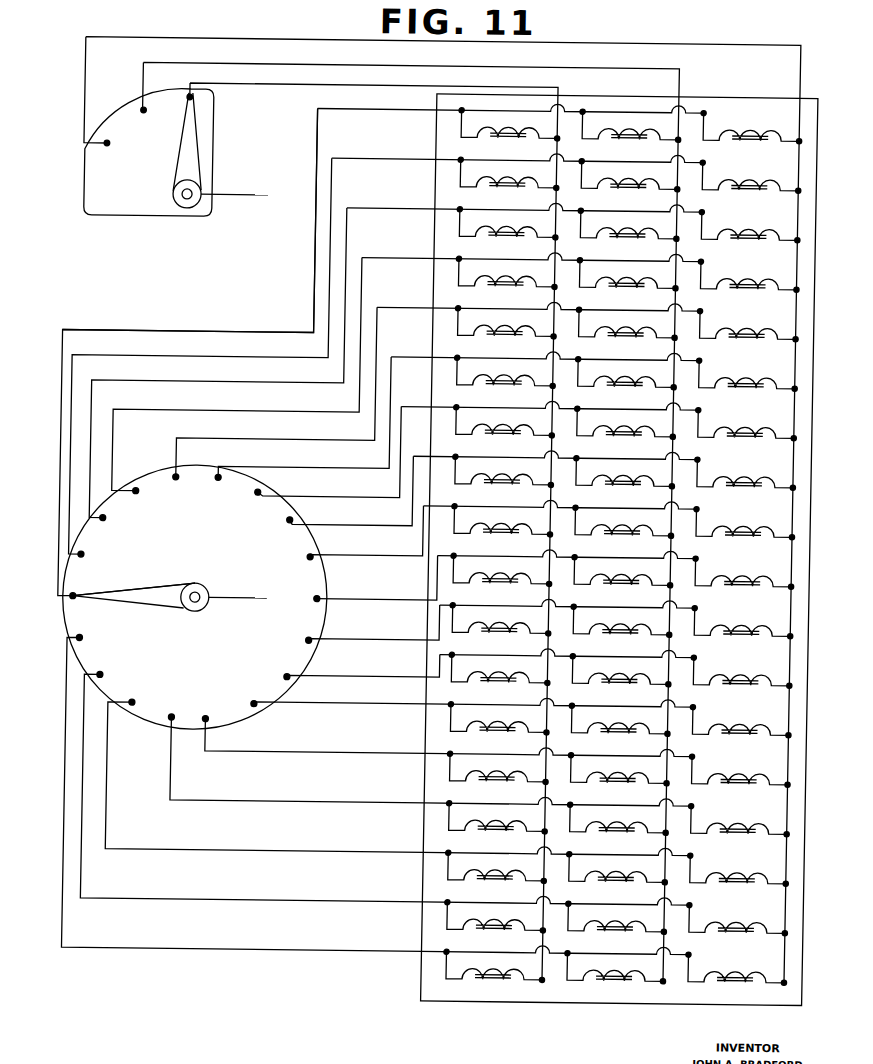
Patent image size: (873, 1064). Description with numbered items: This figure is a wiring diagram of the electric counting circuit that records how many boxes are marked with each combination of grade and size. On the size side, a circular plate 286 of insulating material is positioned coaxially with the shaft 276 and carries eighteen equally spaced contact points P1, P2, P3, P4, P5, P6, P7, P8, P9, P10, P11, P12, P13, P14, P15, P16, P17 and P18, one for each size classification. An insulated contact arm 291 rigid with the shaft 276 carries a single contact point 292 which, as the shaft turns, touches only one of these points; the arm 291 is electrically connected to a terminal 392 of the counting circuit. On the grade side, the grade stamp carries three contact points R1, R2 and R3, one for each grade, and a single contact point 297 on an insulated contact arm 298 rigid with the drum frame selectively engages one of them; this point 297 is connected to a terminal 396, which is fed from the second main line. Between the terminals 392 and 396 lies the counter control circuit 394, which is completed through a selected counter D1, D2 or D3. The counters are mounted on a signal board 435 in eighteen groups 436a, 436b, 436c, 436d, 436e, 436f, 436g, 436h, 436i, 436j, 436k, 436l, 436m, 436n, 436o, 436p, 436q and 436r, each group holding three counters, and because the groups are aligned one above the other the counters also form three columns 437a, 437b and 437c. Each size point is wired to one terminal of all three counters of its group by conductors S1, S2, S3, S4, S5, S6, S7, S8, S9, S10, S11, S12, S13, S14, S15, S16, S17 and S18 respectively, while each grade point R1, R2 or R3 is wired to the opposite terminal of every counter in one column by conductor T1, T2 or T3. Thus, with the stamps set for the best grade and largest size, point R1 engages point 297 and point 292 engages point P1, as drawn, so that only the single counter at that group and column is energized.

The conductor T1 is at (265, 40).
The conductor T2 is at (320, 65).
The conductor T3 is at (386, 88).
The contact point R1 is at (186, 101).
The contact point R2 is at (137, 114).
The contact point R3 is at (101, 147).
The contact point 297 is at (191, 117).
The contact arm 298 is at (188, 162).
The terminal 396 is at (262, 197).
The counter control circuit 394 is at (268, 330).
The circular plate 286 is at (194, 597).
The contact arm 291 is at (190, 609).
The contact point 292 is at (86, 602).
The shaft 276 is at (205, 592).
The terminal 392 is at (266, 588).
The contact point P1 is at (76, 600).
The contact point P2 is at (84, 558).
The contact point P3 is at (105, 523).
The contact point P4 is at (137, 497).
The contact point P5 is at (172, 480).
The contact point P6 is at (214, 480).
The contact point P7 is at (254, 495).
The contact point P8 is at (286, 522).
The contact point P9 is at (307, 559).
The contact point P10 is at (315, 600).
The contact point P11 is at (313, 642).
The contact point P12 is at (287, 679).
The contact point P13 is at (254, 706).
The contact point P14 is at (212, 721).
The contact point P15 is at (178, 718).
The contact point P16 is at (137, 709).
The contact point P17 is at (105, 679).
The contact point P18 is at (84, 643).
The conductor S1 is at (176, 334).
The conductor S2 is at (186, 359).
The conductor S3 is at (186, 384).
The conductor S4 is at (191, 413).
The conductor S5 is at (252, 441).
The conductor S6 is at (272, 469).
The conductor S7 is at (319, 501).
The conductor S8 is at (344, 524).
The conductor S9 is at (332, 568).
The conductor S10 is at (335, 598).
The conductor S11 is at (362, 653).
The conductor S12 is at (310, 687).
The conductor S13 is at (302, 708).
The conductor S14 is at (229, 754).
The conductor S15 is at (187, 803).
The conductor S16 is at (174, 852).
The conductor S17 is at (172, 902).
The conductor S18 is at (174, 951).
The counter group 436a is at (428, 140).
The counter group 436b is at (428, 189).
The counter group 436c is at (428, 238).
The counter group 436d is at (428, 277).
The counter group 436e is at (428, 326).
The counter group 436f is at (428, 384).
The counter group 436g is at (428, 428).
The counter group 436h is at (428, 481).
The counter group 436i is at (428, 541).
The counter group 436j is at (428, 583).
The counter group 436k is at (428, 621).
The counter group 436l is at (428, 668).
The counter group 436m is at (428, 717).
The counter group 436n is at (428, 770).
The counter group 436o is at (428, 809).
The counter group 436p is at (428, 871).
The counter group 436q is at (428, 921).
The counter group 436r is at (428, 964).
The counter D1 is at (501, 570).
The counter D2 is at (622, 571).
The counter D3 is at (743, 573).
The signal board 435 is at (428, 978).
The counter column 437a is at (505, 982).
The counter column 437b is at (622, 982).
The counter column 437c is at (745, 982).